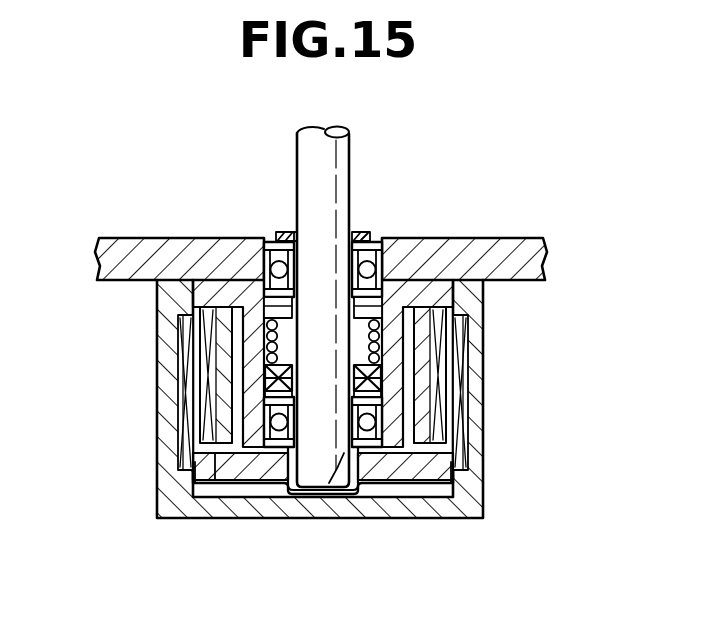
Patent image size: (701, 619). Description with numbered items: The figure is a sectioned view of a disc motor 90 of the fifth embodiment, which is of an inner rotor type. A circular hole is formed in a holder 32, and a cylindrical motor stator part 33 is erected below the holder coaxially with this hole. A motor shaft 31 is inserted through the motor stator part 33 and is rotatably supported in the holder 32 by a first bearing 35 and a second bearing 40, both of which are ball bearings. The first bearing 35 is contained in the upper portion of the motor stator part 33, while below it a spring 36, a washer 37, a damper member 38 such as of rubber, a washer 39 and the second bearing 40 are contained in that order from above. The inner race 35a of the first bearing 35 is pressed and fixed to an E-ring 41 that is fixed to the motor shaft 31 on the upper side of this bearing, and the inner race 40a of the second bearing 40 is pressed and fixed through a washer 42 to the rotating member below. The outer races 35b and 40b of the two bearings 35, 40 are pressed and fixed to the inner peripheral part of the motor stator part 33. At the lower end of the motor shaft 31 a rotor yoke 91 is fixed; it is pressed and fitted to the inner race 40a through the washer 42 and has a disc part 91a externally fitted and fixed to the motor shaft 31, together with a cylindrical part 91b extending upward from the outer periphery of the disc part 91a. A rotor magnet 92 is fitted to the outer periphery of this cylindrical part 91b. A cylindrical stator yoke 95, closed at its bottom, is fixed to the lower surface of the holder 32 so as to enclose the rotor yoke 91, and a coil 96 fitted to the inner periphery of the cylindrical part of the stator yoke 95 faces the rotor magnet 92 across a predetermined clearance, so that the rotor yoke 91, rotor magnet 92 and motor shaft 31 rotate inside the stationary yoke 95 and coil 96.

The motor 90 is at (210, 160).
The motor shaft 31 is at (352, 150).
The holder 32 is at (498, 242).
The motor stator part 33 is at (413, 305).
The first bearing 35 is at (373, 234).
The inner race of the first bearing 35a is at (297, 200).
The outer race of the first bearing 35b is at (265, 258).
The spring 36 is at (263, 298).
The washer 37 is at (265, 367).
The damper member 38 is at (265, 379).
The washer 39 is at (265, 393).
The second bearing 40 is at (390, 482).
The inner race of the second bearing 40a is at (284, 482).
The outer race of the second bearing 40b is at (253, 488).
The E-ring 41 is at (285, 231).
The washer 42 is at (327, 480).
The rotor yoke 91 is at (445, 500).
The disc part 91a is at (427, 478).
The cylindrical part 91b is at (193, 470).
The rotor magnet 92 is at (482, 366).
The stator yoke 95 is at (486, 473).
The coil 96 is at (462, 332).